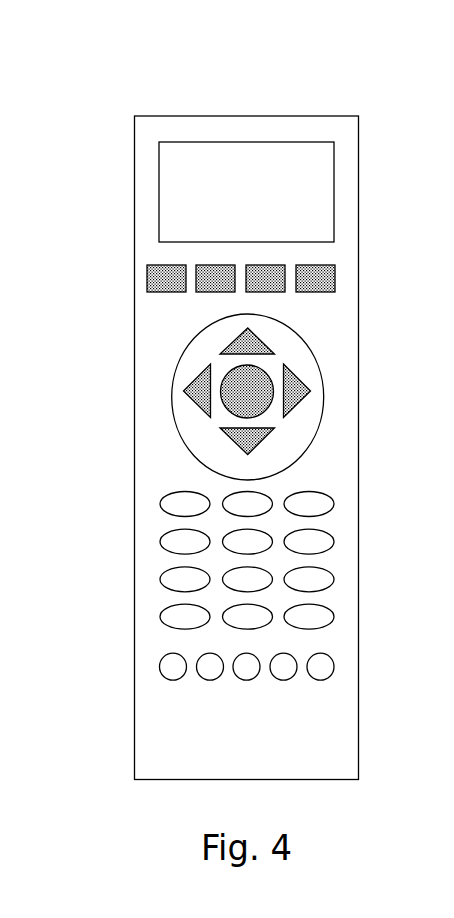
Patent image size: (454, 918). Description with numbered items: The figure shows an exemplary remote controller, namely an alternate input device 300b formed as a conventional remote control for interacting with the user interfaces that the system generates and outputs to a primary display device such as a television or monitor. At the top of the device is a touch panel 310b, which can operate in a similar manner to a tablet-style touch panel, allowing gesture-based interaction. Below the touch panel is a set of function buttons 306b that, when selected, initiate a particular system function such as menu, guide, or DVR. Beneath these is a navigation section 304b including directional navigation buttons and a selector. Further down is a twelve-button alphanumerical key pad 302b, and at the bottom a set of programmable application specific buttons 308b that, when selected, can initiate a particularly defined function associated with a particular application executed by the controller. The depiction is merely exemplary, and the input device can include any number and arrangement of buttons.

The input device 300b is at (349, 114).
The touch panel 310b is at (359, 129).
The function buttons 306b is at (359, 253).
The navigation section 304b is at (359, 315).
The alphanumerical key pad 302b is at (359, 492).
The programmable application specific buttons 308b is at (359, 643).